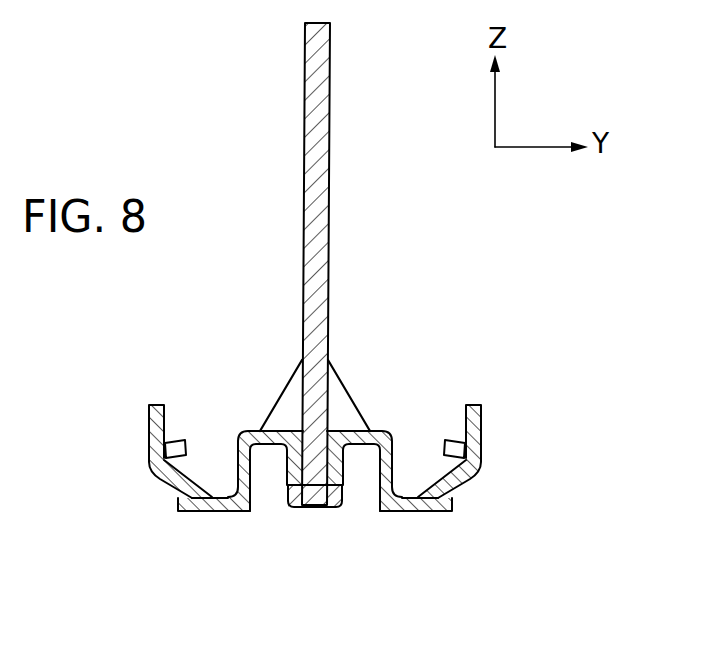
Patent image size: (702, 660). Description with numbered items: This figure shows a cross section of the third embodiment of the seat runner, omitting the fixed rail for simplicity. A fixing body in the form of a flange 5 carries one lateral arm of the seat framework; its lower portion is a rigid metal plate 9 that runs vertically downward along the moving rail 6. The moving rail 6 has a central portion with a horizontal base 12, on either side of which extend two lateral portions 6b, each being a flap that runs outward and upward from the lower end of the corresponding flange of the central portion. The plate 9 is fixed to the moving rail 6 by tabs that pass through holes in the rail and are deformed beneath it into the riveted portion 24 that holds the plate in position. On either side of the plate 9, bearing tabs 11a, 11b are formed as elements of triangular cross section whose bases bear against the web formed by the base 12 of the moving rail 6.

The flange 5 is at (284, 264).
The plate 9 is at (320, 195).
The moving rail 6 is at (314, 503).
The lateral portion 6b is at (168, 444).
The bearing tab 11a is at (292, 430).
The bearing tab 11b is at (332, 430).
The base 12 is at (245, 436).
The base plate 24 is at (313, 507).